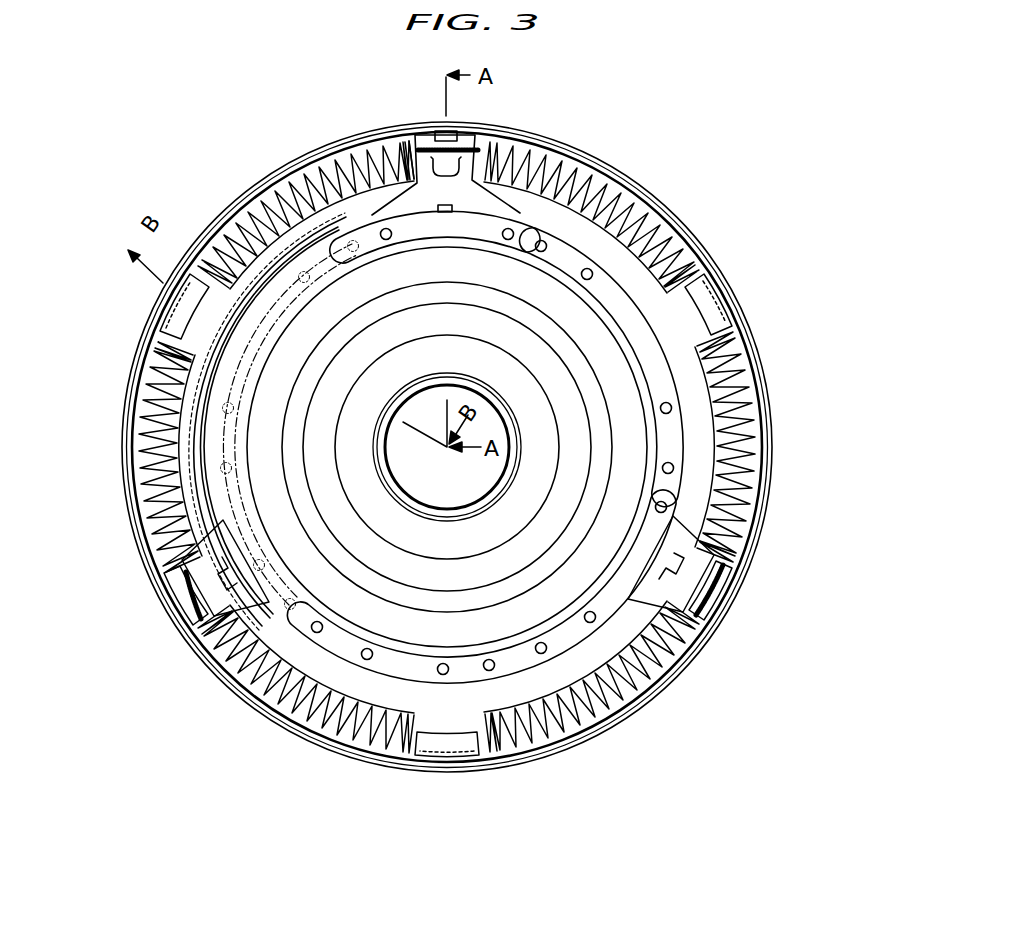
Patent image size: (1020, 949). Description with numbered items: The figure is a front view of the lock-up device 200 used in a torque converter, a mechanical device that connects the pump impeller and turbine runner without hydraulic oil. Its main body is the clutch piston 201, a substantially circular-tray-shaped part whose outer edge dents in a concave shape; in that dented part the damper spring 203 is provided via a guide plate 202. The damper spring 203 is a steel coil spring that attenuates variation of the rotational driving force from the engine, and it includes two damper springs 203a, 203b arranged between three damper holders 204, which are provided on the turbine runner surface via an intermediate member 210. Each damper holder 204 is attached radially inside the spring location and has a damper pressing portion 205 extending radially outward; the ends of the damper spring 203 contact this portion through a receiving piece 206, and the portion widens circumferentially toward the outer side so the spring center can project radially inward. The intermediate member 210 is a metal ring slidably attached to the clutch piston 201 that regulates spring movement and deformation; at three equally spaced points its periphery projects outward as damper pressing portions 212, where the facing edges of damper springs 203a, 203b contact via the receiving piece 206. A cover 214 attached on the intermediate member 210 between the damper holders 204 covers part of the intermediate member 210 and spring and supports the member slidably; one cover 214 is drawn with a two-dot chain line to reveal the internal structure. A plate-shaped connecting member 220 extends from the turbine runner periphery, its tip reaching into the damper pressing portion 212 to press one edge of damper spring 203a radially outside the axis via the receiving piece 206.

The lock-up device 200 is at (756, 131).
The clutch piston 201 is at (774, 444).
The guide plate 202 is at (766, 409).
The damper spring 203 is at (880, 258).
The damper spring 203a is at (296, 186).
The damper spring 203b is at (683, 216).
The damper holder 204 is at (450, 237).
The damper pressing portion 205 is at (427, 130).
The receiving piece 206 is at (403, 148).
The intermediate member 210 is at (135, 444).
The damper pressing portion 212 is at (160, 294).
The cover 214 is at (352, 700).
The connecting member 220 is at (478, 134).